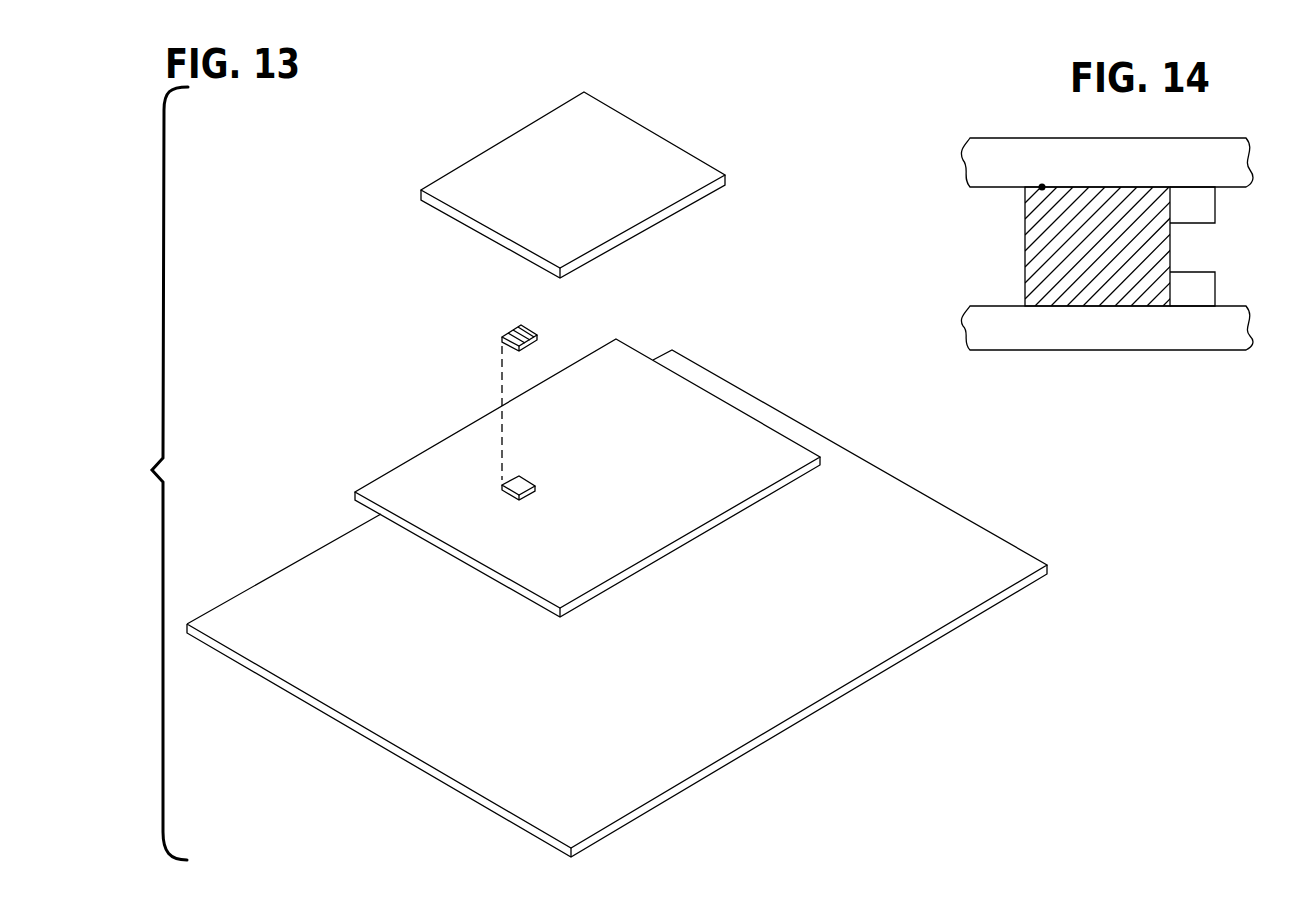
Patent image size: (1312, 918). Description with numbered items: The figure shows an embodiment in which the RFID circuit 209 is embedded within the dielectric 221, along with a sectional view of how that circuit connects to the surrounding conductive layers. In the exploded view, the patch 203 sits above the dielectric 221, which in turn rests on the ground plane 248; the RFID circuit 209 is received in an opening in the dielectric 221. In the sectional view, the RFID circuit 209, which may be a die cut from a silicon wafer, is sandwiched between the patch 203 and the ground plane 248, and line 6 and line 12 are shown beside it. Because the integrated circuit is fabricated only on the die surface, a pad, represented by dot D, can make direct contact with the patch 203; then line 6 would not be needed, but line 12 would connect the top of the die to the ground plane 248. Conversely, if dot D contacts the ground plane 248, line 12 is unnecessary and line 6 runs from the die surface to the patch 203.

In FIG. 13, the patch 203 is at (590, 182).
In FIG. 14, the patch 203 is at (1127, 176).
In FIG. 13, the RFID circuit 209 is at (530, 333).
In FIG. 14, the RFID circuit 209 is at (1025, 241).
In FIG. 13, the dielectric 221 is at (678, 469).
In FIG. 13, the ground plane 248 is at (893, 587).
In FIG. 14, the ground plane 248 is at (1127, 341).
In FIG. 14, the dot D is at (1042, 187).
In FIG. 14, the line 6 is at (1198, 223).
In FIG. 14, the line 12 is at (1215, 292).